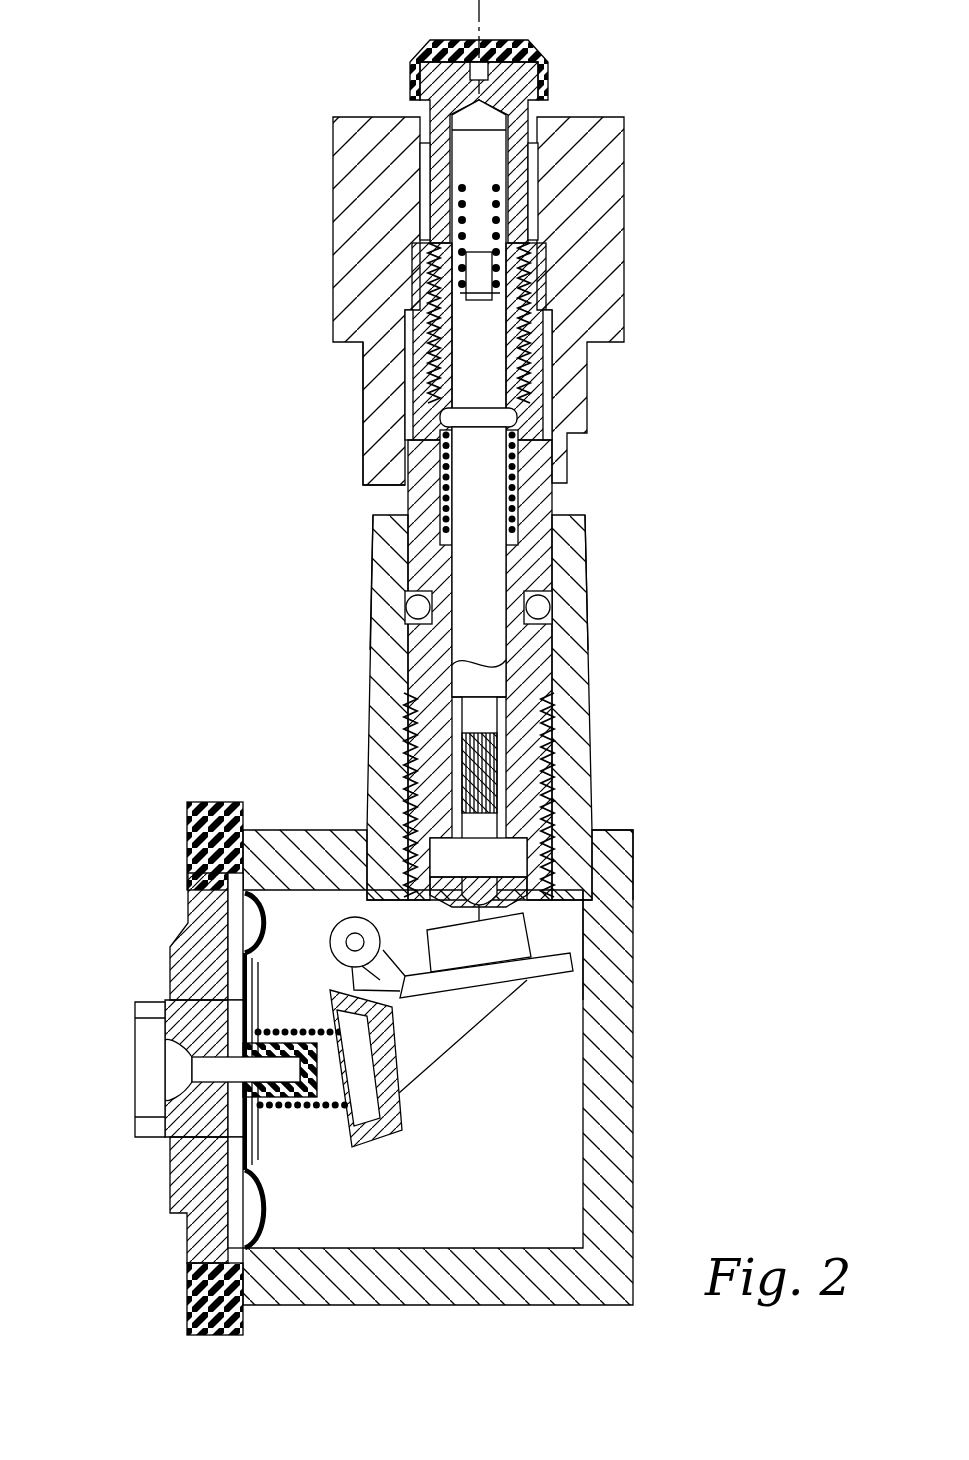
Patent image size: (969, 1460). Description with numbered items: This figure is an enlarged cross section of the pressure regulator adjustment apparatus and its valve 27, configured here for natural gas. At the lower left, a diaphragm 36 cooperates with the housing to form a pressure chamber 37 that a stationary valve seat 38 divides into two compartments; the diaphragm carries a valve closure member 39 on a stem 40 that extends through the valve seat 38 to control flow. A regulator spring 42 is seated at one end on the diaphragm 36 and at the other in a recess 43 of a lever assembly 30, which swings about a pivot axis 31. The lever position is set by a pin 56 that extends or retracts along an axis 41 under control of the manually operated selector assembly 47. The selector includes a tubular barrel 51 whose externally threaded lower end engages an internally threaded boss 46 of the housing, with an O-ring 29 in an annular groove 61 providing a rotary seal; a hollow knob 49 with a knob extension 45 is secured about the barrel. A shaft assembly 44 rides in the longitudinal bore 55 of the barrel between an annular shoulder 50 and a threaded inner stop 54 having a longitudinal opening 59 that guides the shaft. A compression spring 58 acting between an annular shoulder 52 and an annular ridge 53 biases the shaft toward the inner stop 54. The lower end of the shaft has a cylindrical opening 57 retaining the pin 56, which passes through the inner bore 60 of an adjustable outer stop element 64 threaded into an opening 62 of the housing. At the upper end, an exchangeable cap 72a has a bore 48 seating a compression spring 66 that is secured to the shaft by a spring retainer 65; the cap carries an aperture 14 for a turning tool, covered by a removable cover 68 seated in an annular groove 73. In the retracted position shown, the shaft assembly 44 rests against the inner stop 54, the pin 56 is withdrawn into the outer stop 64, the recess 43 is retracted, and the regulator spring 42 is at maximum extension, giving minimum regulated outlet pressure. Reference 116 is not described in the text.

The aperture 14 is at (488, 58).
The removable cover 68 is at (540, 55).
The exchangeable cap 72a is at (437, 108).
The annular groove 73 is at (530, 110).
The axis 41 is at (478, 132).
The bore 48 is at (500, 160).
The compression spring 66 is at (498, 215).
The spring retainer 65 is at (466, 264).
The selector assembly 47 is at (700, 181).
The knob 49 is at (624, 283).
The longitudinal opening 59 is at (436, 345).
The inner stop 54 is at (530, 352).
The annular ridge 53 is at (517, 414).
The compression spring 58 is at (527, 447).
The tubular barrel 51 is at (540, 500).
The knob extension 45 is at (377, 462).
The annular shoulder 50 is at (416, 500).
The annular shoulder 52 is at (386, 548).
The longitudinal bore 55 is at (556, 558).
The O-ring 29 is at (405, 605).
The annular groove 61 is at (556, 607).
The shaft assembly 44 is at (465, 645).
The threaded boss 46 is at (580, 690).
The cylindrical opening 57 is at (492, 720).
The pin 56 is at (560, 790).
The outer stop element 64 is at (600, 882).
The inner bore 60 is at (470, 914).
The opening 62 is at (596, 930).
The body 116 is at (612, 1022).
The lever assembly 30 is at (556, 972).
The pivot axis 31 is at (348, 944).
The pressure chamber 37 is at (228, 905).
The valve 27 is at (122, 1028).
The valve closure member 39 is at (178, 1070).
The stem 40 is at (220, 1082).
The regulator spring 42 is at (320, 1110).
The recess 43 is at (366, 1133).
The valve seat 38 is at (185, 1180).
The diaphragm 36 is at (264, 1218).